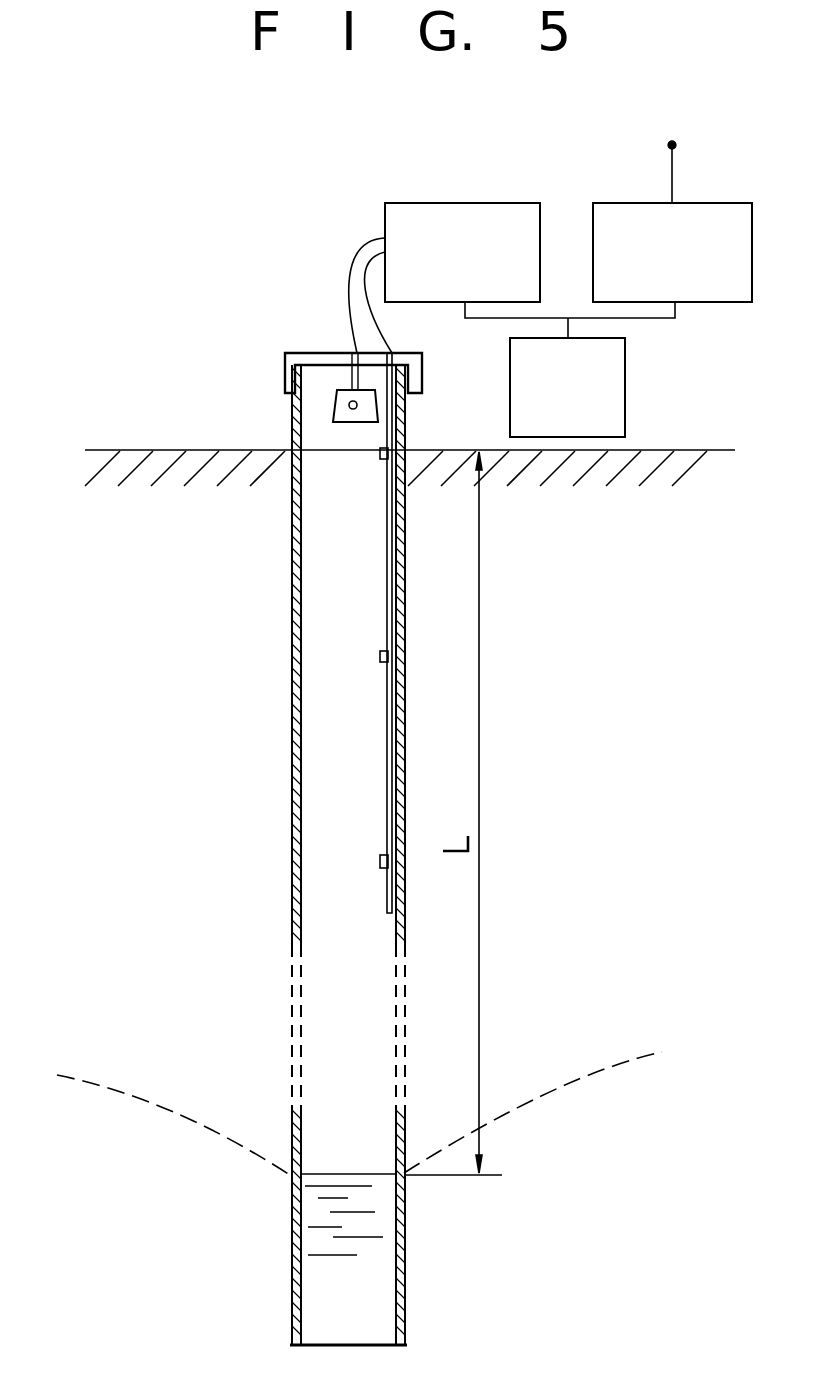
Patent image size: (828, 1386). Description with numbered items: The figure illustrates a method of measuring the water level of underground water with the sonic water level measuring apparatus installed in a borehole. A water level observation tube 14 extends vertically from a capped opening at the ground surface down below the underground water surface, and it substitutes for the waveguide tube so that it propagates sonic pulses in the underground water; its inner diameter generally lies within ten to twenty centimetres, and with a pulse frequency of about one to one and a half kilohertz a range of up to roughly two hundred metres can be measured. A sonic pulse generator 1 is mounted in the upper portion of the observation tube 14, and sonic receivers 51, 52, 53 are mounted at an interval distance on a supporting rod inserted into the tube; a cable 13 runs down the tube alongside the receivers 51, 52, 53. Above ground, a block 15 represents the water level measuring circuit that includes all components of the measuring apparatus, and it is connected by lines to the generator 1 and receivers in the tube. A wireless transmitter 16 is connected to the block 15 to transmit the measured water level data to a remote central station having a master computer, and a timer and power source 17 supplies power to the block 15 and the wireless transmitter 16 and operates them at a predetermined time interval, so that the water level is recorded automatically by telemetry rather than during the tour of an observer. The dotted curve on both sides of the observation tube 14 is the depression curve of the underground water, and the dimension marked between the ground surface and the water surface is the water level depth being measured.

The sonic pulse generator 1 is at (337, 410).
The cable 13 is at (387, 540).
The water level observation tube 14 is at (292, 732).
The water level measuring circuit block 15 is at (493, 203).
The wireless transmitter 16 is at (610, 203).
The timer and power source 17 is at (625, 378).
The sonic receiver 51 is at (380, 453).
The sonic receiver 52 is at (380, 656).
The sonic receiver 53 is at (380, 861).